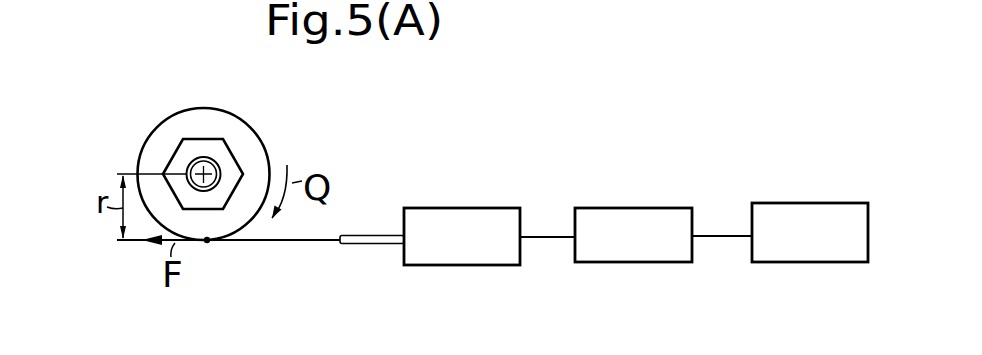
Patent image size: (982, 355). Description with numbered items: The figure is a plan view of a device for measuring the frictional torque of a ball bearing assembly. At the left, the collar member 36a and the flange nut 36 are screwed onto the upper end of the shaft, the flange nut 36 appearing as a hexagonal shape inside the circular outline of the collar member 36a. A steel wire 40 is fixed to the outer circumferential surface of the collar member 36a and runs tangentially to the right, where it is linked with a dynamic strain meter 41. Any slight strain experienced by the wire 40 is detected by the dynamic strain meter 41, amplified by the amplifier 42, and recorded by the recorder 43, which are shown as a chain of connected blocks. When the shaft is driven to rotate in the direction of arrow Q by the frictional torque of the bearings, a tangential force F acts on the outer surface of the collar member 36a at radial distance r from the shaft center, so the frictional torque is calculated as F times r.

The flange nut 36 is at (237, 159).
The collar member 36a is at (145, 141).
The steel wire 40 is at (293, 243).
The dynamic strain meter 41 is at (452, 215).
The amplifier 42 is at (630, 215).
The recorder 43 is at (797, 216).